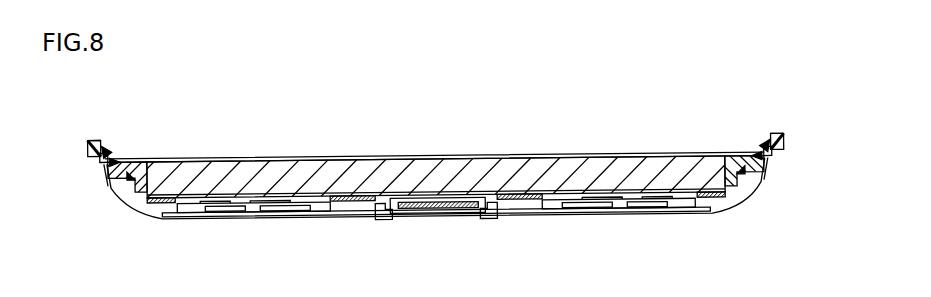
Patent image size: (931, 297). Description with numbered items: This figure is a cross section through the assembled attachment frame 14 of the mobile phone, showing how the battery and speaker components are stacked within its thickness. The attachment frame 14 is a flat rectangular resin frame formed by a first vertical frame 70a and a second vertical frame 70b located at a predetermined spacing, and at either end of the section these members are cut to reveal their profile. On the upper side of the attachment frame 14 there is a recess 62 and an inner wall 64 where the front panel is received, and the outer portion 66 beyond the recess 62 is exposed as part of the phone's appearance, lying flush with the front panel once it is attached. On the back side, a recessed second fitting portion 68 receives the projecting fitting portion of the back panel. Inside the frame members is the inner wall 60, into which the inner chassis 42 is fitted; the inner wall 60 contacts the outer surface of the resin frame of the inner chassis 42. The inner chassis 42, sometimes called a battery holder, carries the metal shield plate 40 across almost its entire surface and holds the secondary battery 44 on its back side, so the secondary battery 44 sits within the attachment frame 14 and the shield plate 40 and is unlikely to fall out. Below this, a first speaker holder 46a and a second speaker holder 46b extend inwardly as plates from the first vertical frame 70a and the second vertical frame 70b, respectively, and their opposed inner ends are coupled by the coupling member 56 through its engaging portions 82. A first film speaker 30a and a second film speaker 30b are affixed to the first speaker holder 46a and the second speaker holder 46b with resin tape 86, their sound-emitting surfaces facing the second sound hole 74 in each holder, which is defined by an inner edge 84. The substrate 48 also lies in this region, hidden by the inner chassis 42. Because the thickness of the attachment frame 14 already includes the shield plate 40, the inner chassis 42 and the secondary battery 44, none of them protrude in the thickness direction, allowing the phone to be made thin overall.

The attachment frame 14 is at (735, 205).
The first film speaker 30a is at (300, 212).
The second film speaker 30b is at (578, 212).
The shield plate 40 is at (410, 158).
The inner chassis 42 is at (128, 165).
The secondary battery 44 is at (470, 158).
The first speaker holder 46a is at (276, 224).
The second speaker holder 46b is at (608, 228).
The substrate 48 is at (430, 222).
The coupling member 56 is at (466, 222).
The inner wall 60 is at (114, 160).
The recess 62 is at (106, 165).
The inner wall 64 is at (108, 147).
The outer portion 66 is at (88, 147).
The second fitting portion 68 is at (102, 160).
The first vertical frame 70a is at (94, 134).
The second vertical frame 70b is at (780, 133).
The second sound hole 74 is at (216, 219).
The engaging portion 82 is at (372, 222).
The inner edge 84 is at (245, 193).
The resin tape 86 is at (192, 198).